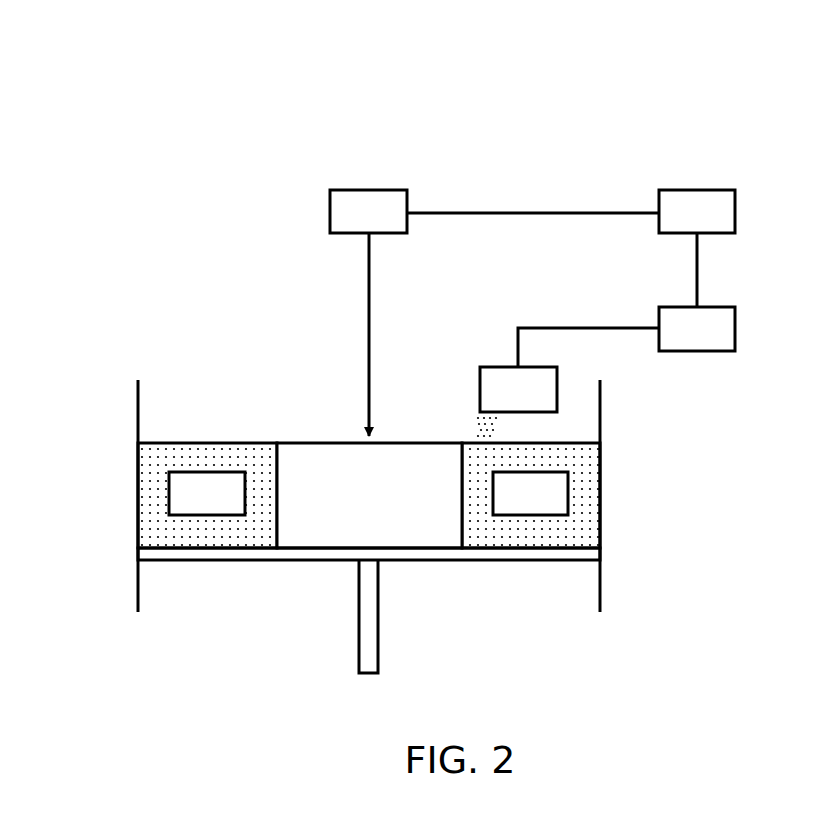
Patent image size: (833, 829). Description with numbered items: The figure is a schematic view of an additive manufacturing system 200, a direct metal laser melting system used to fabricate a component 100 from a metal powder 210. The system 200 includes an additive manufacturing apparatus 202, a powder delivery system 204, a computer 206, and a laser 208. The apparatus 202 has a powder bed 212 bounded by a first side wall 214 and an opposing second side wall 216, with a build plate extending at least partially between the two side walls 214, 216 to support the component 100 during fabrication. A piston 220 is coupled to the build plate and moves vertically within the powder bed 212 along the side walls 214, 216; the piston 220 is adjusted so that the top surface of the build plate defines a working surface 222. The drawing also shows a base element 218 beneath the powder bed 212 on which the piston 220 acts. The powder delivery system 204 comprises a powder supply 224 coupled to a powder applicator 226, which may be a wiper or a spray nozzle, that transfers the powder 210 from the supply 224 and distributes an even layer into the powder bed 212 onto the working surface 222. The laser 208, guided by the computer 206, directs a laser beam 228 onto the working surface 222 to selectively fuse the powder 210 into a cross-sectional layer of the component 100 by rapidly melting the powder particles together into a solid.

The component 100 is at (369, 495).
The additive manufacturing system 200 is at (200, 100).
The additive manufacturing apparatus 202 is at (288, 362).
The powder delivery system 204 is at (533, 312).
The computer 206 is at (736, 211).
The laser 208 is at (330, 212).
The metal powder 210 is at (207, 493).
The powder bed 212 is at (601, 466).
The first side wall 214 is at (138, 588).
The second side wall 216 is at (601, 582).
The base plate 218 is at (522, 555).
The piston 220 is at (378, 615).
The working surface 222 is at (490, 550).
The powder supply 224 is at (736, 330).
The powder applicator 226 is at (480, 390).
The laser beam 228 is at (369, 308).